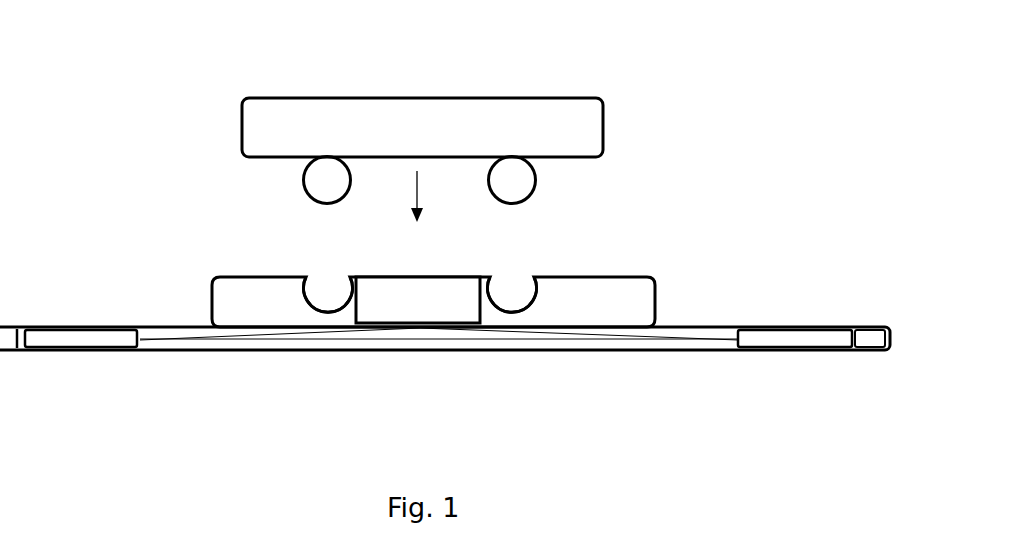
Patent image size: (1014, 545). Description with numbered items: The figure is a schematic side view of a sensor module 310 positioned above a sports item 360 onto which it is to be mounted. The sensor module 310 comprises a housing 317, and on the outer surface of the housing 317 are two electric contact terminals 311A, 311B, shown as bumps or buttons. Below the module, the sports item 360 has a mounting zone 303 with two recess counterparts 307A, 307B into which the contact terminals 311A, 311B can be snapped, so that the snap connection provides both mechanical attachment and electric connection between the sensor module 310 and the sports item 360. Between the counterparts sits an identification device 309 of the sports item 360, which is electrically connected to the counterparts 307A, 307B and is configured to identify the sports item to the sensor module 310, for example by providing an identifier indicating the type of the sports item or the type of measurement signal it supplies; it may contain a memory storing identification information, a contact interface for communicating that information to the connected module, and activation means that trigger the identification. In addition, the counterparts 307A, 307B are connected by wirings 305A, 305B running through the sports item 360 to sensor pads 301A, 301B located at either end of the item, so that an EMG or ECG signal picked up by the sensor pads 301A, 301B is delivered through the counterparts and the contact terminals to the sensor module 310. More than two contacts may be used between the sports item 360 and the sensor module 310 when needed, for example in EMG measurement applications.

The sensor module 310 is at (656, 128).
The housing 317 is at (422, 97).
The electric contact terminal 311A is at (306, 191).
The electric contact terminal 311B is at (536, 185).
The mounting zone 303 is at (620, 277).
The recess counterpart 307A is at (327, 277).
The recess counterpart 307B is at (512, 277).
The sports item 360 is at (291, 378).
The wiring 305A is at (170, 338).
The wiring 305B is at (705, 337).
The sensor pad 301A is at (80, 350).
The sensor pad 301B is at (795, 352).
The identification device 309 is at (423, 323).